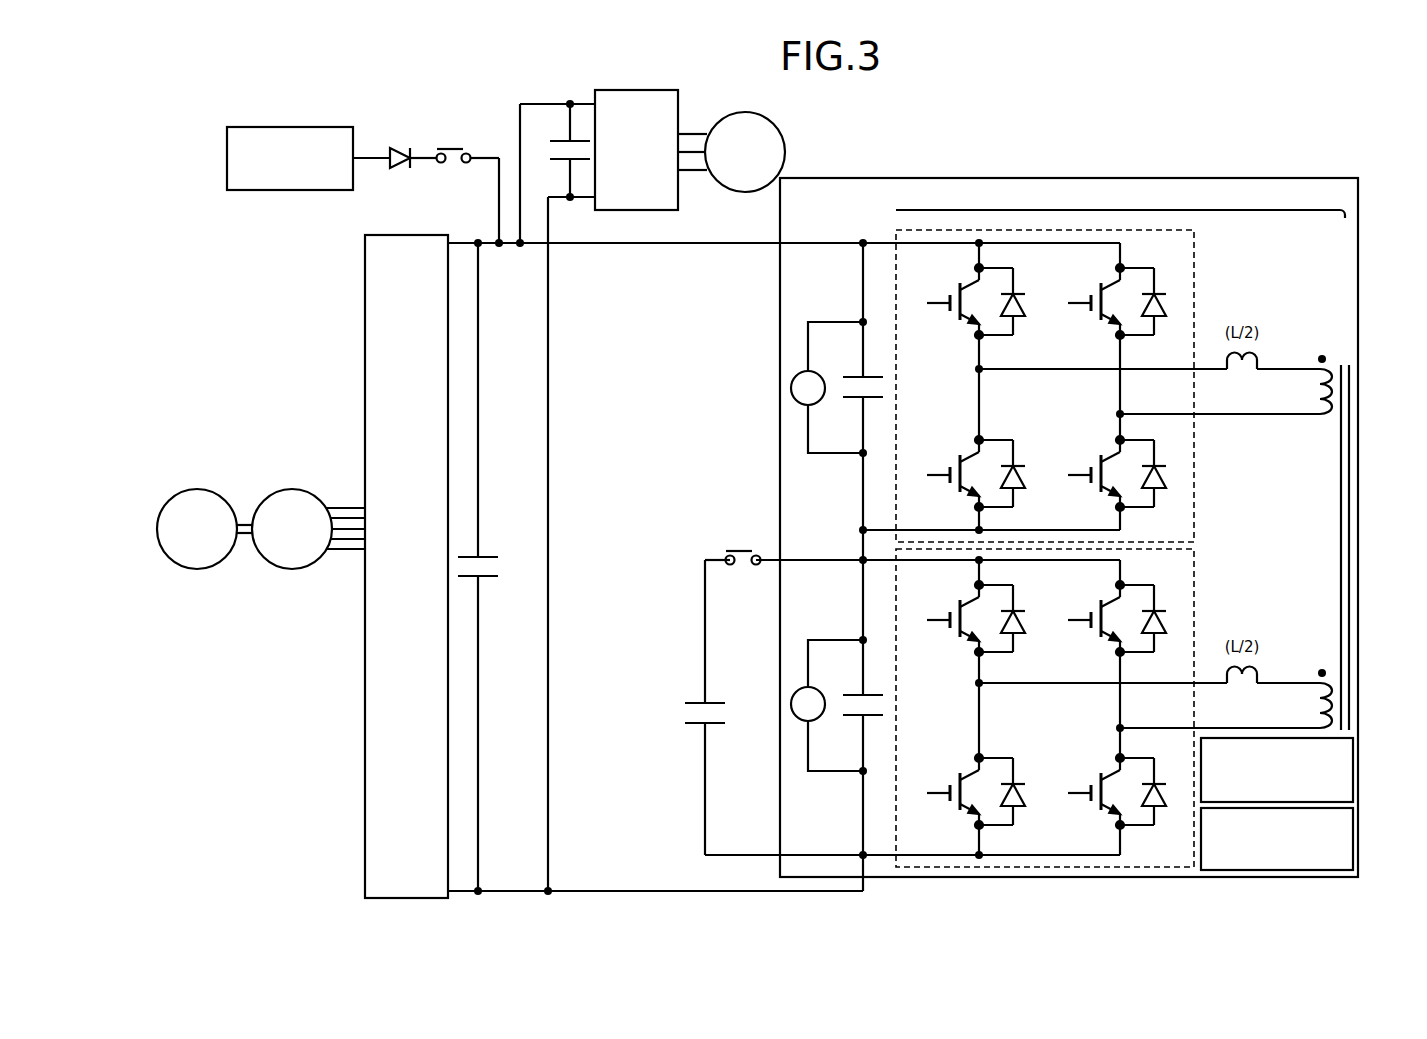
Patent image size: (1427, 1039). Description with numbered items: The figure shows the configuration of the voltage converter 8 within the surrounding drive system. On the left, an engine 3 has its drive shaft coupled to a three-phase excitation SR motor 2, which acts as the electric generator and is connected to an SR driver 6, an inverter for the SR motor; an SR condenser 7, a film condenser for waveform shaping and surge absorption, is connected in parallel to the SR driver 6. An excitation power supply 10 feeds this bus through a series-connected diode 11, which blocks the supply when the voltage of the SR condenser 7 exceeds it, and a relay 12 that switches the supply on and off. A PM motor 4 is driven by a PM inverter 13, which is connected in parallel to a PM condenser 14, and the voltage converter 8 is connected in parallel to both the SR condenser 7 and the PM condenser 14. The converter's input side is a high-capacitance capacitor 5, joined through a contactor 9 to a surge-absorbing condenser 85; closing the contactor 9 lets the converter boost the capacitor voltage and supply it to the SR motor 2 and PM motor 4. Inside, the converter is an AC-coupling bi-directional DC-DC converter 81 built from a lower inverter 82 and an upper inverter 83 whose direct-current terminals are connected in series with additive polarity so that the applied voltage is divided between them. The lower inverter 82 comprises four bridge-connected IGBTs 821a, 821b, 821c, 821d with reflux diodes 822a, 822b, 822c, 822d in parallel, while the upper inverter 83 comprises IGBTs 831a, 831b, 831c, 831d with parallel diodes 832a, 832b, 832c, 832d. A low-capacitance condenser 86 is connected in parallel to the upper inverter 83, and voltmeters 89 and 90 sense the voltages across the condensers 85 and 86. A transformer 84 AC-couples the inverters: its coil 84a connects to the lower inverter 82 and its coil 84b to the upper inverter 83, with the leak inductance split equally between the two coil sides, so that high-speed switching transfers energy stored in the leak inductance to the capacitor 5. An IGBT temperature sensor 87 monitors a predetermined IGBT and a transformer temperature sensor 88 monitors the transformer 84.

The SR motor 2 is at (313, 473).
The engine 3 is at (216, 473).
The PM motor 4 is at (750, 113).
The capacitor 5 is at (713, 703).
The SR driver 6 is at (416, 215).
The SR condenser 7 is at (486, 557).
The voltage converter 8 is at (1260, 178).
The contactor 9 is at (741, 551).
The excitation power supply 10 is at (317, 127).
The diode 11 is at (402, 148).
The relay 12 is at (454, 149).
The PM inverter 13 is at (678, 118).
The PM condenser 14 is at (552, 141).
The AC-coupling bi-directional DC-DC converter 81 is at (1120, 202).
The lower inverter 82 is at (1196, 581).
The upper inverter 83 is at (1196, 266).
The transformer 84 is at (1330, 505).
The coil 84a is at (1320, 670).
The coil 84b is at (1320, 356).
The condenser 85 is at (851, 695).
The condenser 86 is at (851, 377).
The IGBT temperature sensor 87 is at (1353, 832).
The transformer temperature sensor 88 is at (1353, 772).
The voltmeter 89 is at (818, 718).
The voltmeter 90 is at (818, 402).
The IGBT 821a is at (961, 603).
The IGBT 821b is at (1102, 603).
The IGBT 821c is at (961, 776).
The IGBT 821d is at (1102, 776).
The diode 822a is at (1025, 618).
The diode 822b is at (1159, 637).
The diode 822c is at (1025, 789).
The diode 822d is at (1164, 783).
The IGBT 831a is at (961, 286).
The IGBT 831b is at (1102, 286).
The IGBT 831c is at (961, 458).
The IGBT 831d is at (1102, 458).
The diode 832a is at (1025, 301).
The diode 832b is at (1159, 320).
The diode 832c is at (1025, 473).
The diode 832d is at (1164, 467).